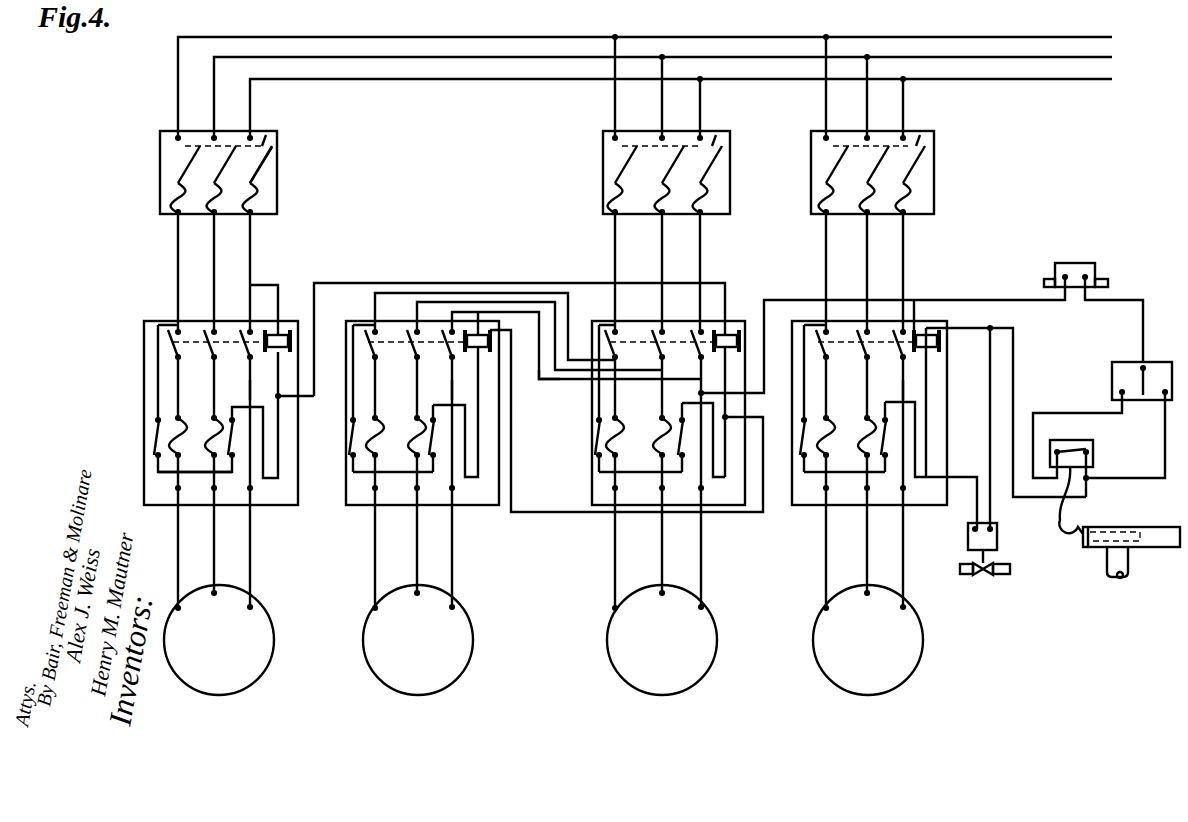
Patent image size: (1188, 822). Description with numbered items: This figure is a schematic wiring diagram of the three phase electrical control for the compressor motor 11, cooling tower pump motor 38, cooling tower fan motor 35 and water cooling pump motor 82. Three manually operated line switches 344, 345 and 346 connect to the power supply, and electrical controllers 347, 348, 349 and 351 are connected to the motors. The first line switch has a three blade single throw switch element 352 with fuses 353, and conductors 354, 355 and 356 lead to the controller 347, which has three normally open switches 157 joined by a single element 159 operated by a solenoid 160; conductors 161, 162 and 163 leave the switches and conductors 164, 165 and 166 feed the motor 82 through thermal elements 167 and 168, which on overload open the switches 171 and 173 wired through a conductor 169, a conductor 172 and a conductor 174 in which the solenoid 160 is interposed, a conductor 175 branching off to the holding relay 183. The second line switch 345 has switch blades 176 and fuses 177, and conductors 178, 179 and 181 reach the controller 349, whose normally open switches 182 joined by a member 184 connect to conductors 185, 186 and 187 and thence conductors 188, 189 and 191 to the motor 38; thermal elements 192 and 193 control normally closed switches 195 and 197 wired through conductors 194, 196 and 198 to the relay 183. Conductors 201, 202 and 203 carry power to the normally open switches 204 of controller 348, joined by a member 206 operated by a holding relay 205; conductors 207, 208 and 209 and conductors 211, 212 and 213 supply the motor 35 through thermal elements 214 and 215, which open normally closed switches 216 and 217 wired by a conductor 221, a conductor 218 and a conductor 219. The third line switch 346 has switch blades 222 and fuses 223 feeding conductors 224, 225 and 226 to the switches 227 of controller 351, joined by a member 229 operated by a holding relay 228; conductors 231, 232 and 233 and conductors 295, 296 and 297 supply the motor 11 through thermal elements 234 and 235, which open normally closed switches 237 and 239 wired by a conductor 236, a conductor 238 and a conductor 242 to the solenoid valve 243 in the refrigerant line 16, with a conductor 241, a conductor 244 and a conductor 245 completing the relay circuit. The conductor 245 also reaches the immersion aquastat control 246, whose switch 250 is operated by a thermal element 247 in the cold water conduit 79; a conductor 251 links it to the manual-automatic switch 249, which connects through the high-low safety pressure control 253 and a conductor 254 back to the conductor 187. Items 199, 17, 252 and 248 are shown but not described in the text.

The three blade, single throw switch element 352 is at (175, 163).
The fuses 353 is at (176, 193).
The line switch 344 is at (268, 163).
The conductor 354 is at (176, 247).
The conductor 355 is at (211, 240).
The conductor 356 is at (249, 233).
The line switch 345 is at (718, 177).
The single throw switch blades 176 is at (625, 160).
The fuses 177 is at (610, 193).
The conductor 178 is at (613, 237).
The conductor 179 is at (660, 240).
The conductor 181 is at (701, 230).
The line switch 346 is at (923, 178).
The single throw switch blades 222 is at (838, 158).
The fuses 223 is at (823, 193).
The conductor 224 is at (824, 237).
The conductor 225 is at (866, 247).
The conductor 226 is at (905, 233).
The electrical controller 347 is at (144, 333).
The conductor 169 is at (156, 370).
The normally open switches 157 is at (212, 347).
The single element 159 is at (240, 347).
The conductor 161 is at (177, 387).
The conductor 162 is at (214, 397).
The conductor 163 is at (250, 397).
The conductor 174 is at (232, 406).
The solenoid 160 is at (279, 332).
The thermal element 168 is at (213, 433).
The thermal element 167 is at (180, 440).
The switch 171 is at (158, 435).
The normally closed switch 173 is at (232, 443).
The conductor 172 is at (170, 473).
The conductor 221 is at (352, 405).
The conductor 175 is at (722, 283).
The conductor 164 is at (177, 533).
The conductor 165 is at (213, 552).
The conductor 166 is at (249, 550).
The water cooling pump motor 82 is at (250, 678).
The electrical controller 348 is at (346, 328).
The conductor 203 is at (403, 292).
The conductor 202 is at (416, 302).
The holding relay 205 is at (478, 311).
The conductor 201 is at (553, 379).
The normally open switches 204 is at (414, 345).
The member 206 is at (443, 343).
The conductor 207 is at (392, 382).
The conductor 208 is at (416, 400).
The conductor 209 is at (451, 392).
The conductor 219 is at (457, 405).
The thermal element 214 is at (393, 422).
The thermal element 215 is at (415, 438).
The normally closed switch 216 is at (352, 437).
The normally closed switch 217 is at (434, 440).
The conductor 218 is at (365, 473).
The conductor 199 is at (762, 513).
The conductor 211 is at (374, 542).
The conductor 212 is at (416, 545).
The conductor 213 is at (453, 543).
The cooling tower fan motor 35 is at (443, 678).
The electrical controller 349 is at (592, 326).
The normally opened switches 182 is at (658, 342).
The member 184 is at (688, 343).
The holding relay 183 is at (727, 332).
The conductor 185 is at (615, 393).
The conductor 186 is at (662, 398).
The conductor 198 is at (700, 393).
The thermal element 193 is at (661, 425).
The thermal element 192 is at (617, 445).
The conductor 194 is at (598, 393).
The normally closed switch 195 is at (599, 430).
The normally closed switch 197 is at (680, 433).
The conductor 196 is at (610, 470).
The conductor 187 is at (703, 478).
The conductor 188 is at (616, 547).
The conductor 189 is at (660, 538).
The conductor 191 is at (702, 565).
The cooling tower pump motor 38 is at (690, 677).
The motor controller 351 is at (792, 333).
The switches 227 is at (866, 347).
The member 229 is at (893, 345).
The holding relay 228 is at (913, 330).
The conductor 231 is at (826, 383).
The conductor 232 is at (867, 405).
The conductor 233 is at (903, 387).
The thermal element 234 is at (830, 433).
The thermal element 235 is at (866, 432).
The conductor 236 is at (803, 388).
The normally closed switch 237 is at (804, 438).
The conductor 238 is at (815, 470).
The normally closed switch 239 is at (886, 433).
The conductor 241 is at (928, 390).
The conductor 244 is at (990, 435).
The conductor 242 is at (976, 507).
The solenoid valve 243 is at (968, 540).
The refrigerant line 16 is at (973, 574).
The valve pipe 17 is at (983, 577).
The conductor 295 is at (826, 572).
The conductor 296 is at (867, 552).
The conductor 297 is at (903, 565).
The compressor motor 11 is at (893, 680).
The conductor 254 is at (987, 300).
The common high-low safety pressure control 253 is at (1088, 264).
The conductor 252 is at (1130, 300).
The manual-automatic switch 249 is at (1155, 367).
The conductor 251 is at (1073, 383).
The switch 250 is at (1067, 450).
The immersion aquastat control 246 is at (1092, 443).
The conductor 248 is at (1133, 465).
The conductor 245 is at (1013, 348).
The conduit 79 is at (1162, 502).
The thermal element 247 is at (1098, 542).